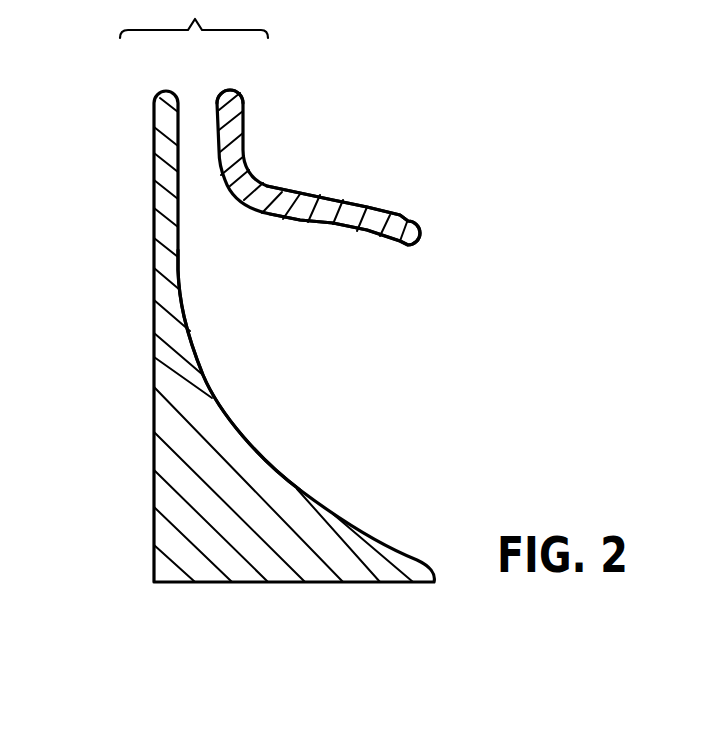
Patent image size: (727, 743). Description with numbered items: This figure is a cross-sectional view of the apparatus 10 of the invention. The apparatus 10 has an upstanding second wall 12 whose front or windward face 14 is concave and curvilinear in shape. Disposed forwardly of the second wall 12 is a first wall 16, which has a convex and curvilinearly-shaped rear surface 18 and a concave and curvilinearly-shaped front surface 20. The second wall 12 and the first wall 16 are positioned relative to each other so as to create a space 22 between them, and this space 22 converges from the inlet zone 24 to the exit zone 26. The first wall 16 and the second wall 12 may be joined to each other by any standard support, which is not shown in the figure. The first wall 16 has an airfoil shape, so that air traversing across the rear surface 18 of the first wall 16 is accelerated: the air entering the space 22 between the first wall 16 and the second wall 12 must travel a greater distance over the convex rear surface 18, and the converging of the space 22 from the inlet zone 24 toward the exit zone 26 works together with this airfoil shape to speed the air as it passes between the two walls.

The apparatus 10 is at (124, 312).
The second wall 12 is at (155, 222).
The windward face 14 is at (177, 258).
The first wall 16 is at (235, 140).
The rear surface 18 is at (212, 118).
The front surface 20 is at (258, 180).
The space 22 is at (193, 108).
The inlet zone 24 is at (330, 357).
The exit zone 26 is at (211, 164).